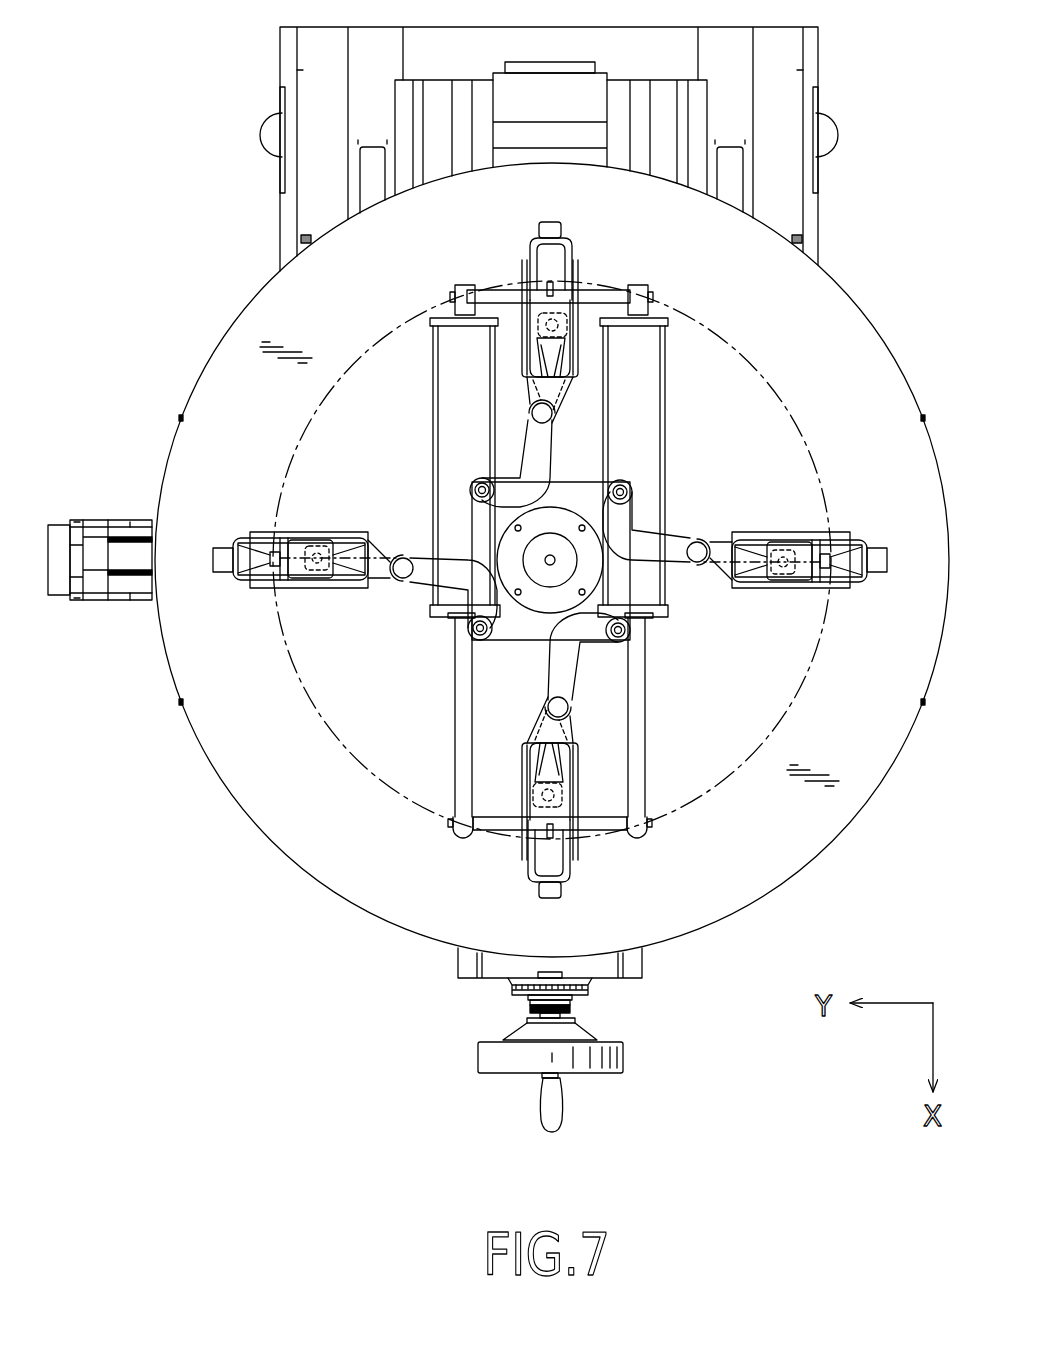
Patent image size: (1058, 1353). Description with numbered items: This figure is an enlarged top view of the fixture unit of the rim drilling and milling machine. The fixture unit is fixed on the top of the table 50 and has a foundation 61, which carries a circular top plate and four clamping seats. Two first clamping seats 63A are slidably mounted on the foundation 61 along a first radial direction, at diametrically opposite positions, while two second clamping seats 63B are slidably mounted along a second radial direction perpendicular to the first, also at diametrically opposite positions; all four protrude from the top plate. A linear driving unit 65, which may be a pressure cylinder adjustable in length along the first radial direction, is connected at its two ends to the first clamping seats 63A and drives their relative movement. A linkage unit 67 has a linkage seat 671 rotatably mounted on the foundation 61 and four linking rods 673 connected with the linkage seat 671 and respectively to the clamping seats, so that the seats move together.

The table 50 is at (240, 341).
The foundation 61 is at (750, 358).
The linear driving unit 65 is at (641, 443).
The linkage unit 67 is at (526, 560).
The linkage seat 671 is at (506, 596).
The linking rods 673 is at (526, 560).
The first clamping seats 63A is at (561, 297).
The second clamping seats 63B is at (815, 546).